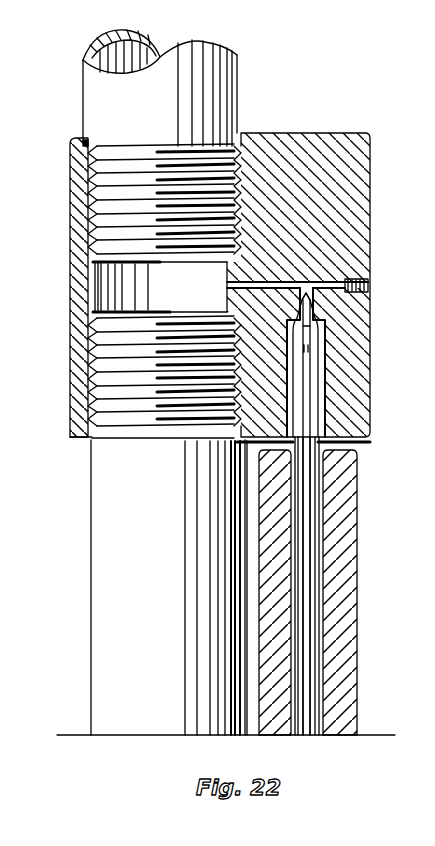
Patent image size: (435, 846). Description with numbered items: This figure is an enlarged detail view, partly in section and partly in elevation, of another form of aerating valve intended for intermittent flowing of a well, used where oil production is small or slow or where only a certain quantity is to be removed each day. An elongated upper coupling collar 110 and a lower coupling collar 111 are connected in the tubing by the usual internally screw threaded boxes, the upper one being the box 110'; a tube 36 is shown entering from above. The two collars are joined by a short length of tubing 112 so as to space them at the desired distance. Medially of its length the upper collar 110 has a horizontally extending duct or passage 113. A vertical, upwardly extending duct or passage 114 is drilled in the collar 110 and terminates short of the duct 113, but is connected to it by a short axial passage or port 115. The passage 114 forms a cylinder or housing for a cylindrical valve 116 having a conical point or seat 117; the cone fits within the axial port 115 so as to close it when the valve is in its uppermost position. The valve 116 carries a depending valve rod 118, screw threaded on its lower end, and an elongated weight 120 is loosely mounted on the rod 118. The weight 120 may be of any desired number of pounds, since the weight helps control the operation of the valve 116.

The tube 36 is at (158, 63).
The upper coupling collar 110 is at (229, 268).
The internally screw threaded box 110' is at (53, 287).
The lower coupling collar 111 is at (428, 173).
The short length of tubing 112 is at (100, 662).
The horizontally extending duct or passage 113 is at (330, 270).
The vertical upwardly extending duct or passage 114 is at (321, 395).
The axial passage or port 115 is at (311, 302).
The cylindrical valve 116 is at (309, 347).
The conical point or seat 117 is at (312, 326).
The depending valve rod 118 is at (305, 527).
The elongated weight 120 is at (355, 650).